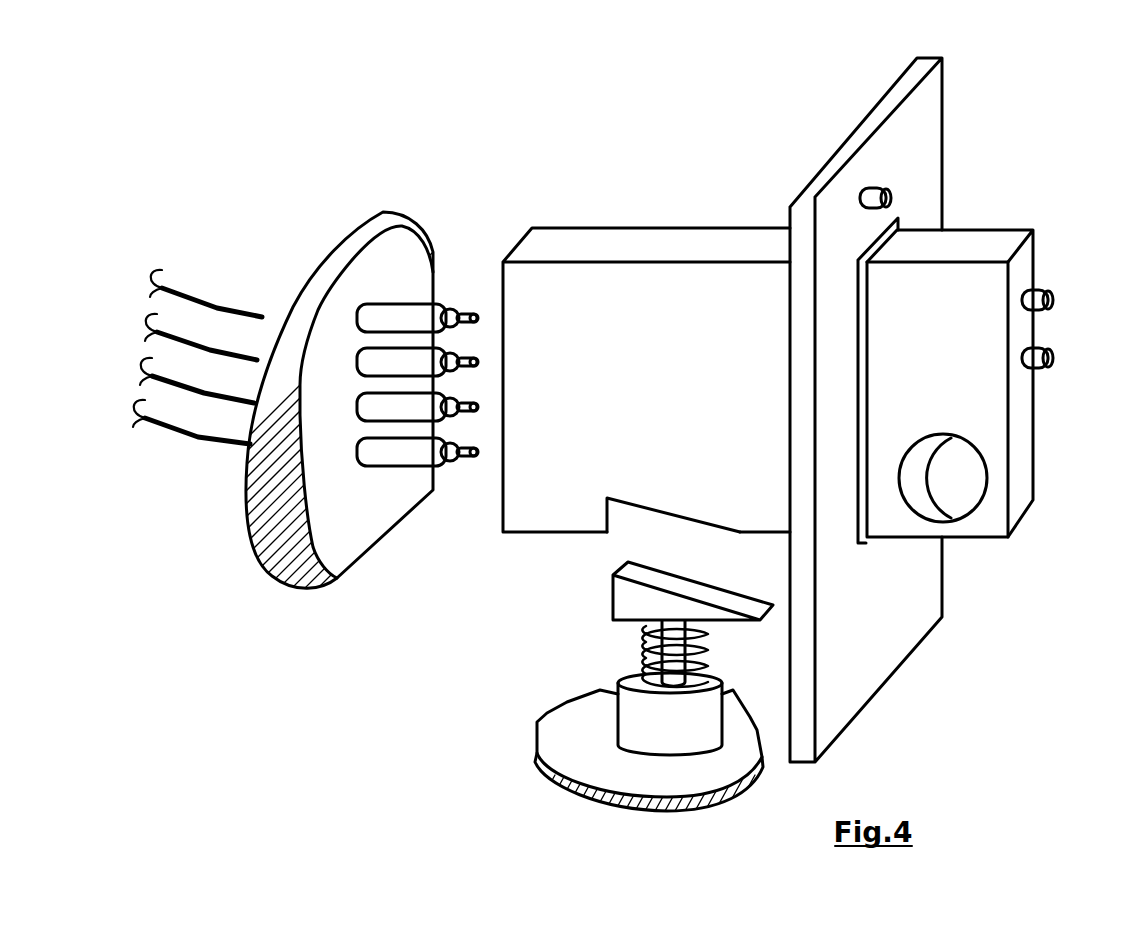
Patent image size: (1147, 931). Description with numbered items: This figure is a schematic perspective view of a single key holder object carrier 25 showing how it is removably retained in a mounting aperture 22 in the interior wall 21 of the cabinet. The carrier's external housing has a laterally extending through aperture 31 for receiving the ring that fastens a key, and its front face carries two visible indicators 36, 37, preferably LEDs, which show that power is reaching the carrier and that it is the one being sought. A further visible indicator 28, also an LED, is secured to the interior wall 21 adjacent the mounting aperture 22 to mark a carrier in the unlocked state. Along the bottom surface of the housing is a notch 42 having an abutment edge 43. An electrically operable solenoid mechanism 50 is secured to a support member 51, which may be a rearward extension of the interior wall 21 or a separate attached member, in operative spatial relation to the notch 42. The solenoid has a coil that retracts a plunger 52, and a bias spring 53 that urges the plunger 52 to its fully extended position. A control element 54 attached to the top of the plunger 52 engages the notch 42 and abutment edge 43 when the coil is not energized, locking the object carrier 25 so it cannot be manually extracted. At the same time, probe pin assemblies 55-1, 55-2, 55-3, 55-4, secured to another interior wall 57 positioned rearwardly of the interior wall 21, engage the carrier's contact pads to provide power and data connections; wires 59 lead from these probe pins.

The interior wall 21 is at (845, 693).
The mounting aperture 22 is at (852, 508).
The object carrier 25 is at (1014, 227).
The visible indicator 28 is at (893, 197).
The through aperture 31 is at (917, 493).
The visible indicator 36 is at (1053, 300).
The visible indicator 37 is at (1053, 360).
The notch 42 is at (647, 518).
The abutment edge 43 is at (620, 514).
The solenoid mechanism 50 is at (603, 724).
The support member 51 is at (588, 760).
The plunger 52 is at (677, 647).
The bias spring 53 is at (647, 663).
The control element 54 is at (640, 603).
The probe pin assembly 55-1 is at (408, 322).
The probe pin assembly 55-2 is at (370, 360).
The probe pin assembly 55-3 is at (373, 407).
The probe pin assembly 55-4 is at (383, 450).
The interior wall 57 is at (377, 277).
The wires 59 is at (148, 286).